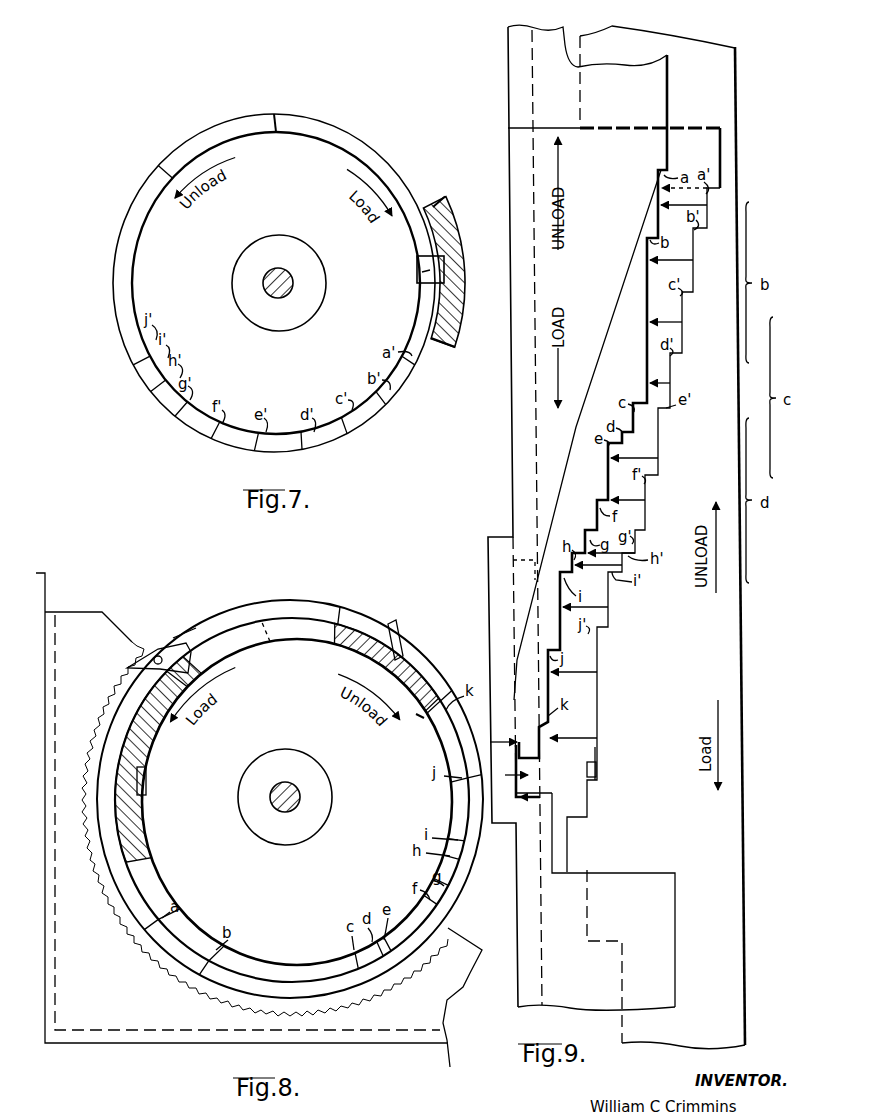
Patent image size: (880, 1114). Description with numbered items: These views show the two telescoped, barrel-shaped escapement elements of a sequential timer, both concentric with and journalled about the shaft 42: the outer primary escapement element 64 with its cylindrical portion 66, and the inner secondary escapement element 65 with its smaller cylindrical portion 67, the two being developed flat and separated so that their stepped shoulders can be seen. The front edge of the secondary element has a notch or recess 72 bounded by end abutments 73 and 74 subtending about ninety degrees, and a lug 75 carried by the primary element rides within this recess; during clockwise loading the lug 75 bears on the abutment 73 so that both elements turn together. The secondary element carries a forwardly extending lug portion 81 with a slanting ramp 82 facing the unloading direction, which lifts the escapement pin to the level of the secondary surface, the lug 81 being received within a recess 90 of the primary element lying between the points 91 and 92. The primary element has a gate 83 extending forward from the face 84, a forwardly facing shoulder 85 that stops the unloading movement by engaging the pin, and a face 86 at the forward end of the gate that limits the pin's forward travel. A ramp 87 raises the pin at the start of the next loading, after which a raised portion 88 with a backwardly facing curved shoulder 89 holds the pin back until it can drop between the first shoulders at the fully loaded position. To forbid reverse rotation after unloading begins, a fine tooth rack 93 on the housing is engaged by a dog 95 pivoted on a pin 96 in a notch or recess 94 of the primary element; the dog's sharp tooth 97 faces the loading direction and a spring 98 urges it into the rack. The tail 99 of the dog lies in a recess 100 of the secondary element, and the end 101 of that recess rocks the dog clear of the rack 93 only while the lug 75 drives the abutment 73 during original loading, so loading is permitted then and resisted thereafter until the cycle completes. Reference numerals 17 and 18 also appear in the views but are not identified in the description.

In FIG. 7, the shaft 42 is at (266, 293).
In FIG. 8, the shaft 42 is at (270, 810).
In FIG. 7, the primary escapement element 64 is at (457, 348).
In FIG. 8, the primary escapement element 64 is at (292, 962).
In FIG. 9, the primary escapement element 64 is at (506, 128).
In FIG. 7, the secondary escapement element 65 is at (128, 352).
In FIG. 8, the secondary escapement element 65 is at (420, 720).
In FIG. 9, the secondary escapement element 65 is at (737, 130).
In FIG. 7, the cylindrical portion 66 is at (449, 346).
In FIG. 8, the cylindrical portion 66 is at (304, 612).
In FIG. 7, the cylindrical portion 67 is at (343, 445).
In FIG. 8, the cylindrical portion 67 is at (345, 645).
In FIG. 7, the notch or recess 72 is at (382, 166).
In FIG. 7, the end abutment 73 is at (430, 290).
In FIG. 8, the end abutment 73 is at (130, 800).
In FIG. 7, the end abutment 74 is at (291, 126).
In FIG. 8, the end abutment 74 is at (260, 620).
In FIG. 7, the lug 75 is at (416, 272).
In FIG. 8, the lug 75 is at (147, 780).
In FIG. 9, the lug portion 81 is at (582, 800).
In FIG. 7, the slanting ramp 82 is at (166, 178).
In FIG. 9, the slanting ramp 82 is at (596, 768).
In FIG. 8, the gate 83 is at (402, 656).
In FIG. 9, the gate 83 is at (556, 736).
In FIG. 9, the primary element face 84 is at (540, 738).
In FIG. 8, the forwardly facing shoulder 85 is at (398, 630).
In FIG. 9, the forwardly facing shoulder 85 is at (562, 783).
In FIG. 8, the face 86 is at (501, 839).
In FIG. 9, the face 86 is at (516, 795).
In FIG. 8, the ramp or slanting portion 87 is at (428, 688).
In FIG. 9, the ramp or slanting portion 87 is at (505, 736).
In FIG. 8, the raised portion 88 is at (452, 914).
In FIG. 9, the raised portion 88 is at (548, 424).
In FIG. 9, the backwardly facing curved shoulder 89 is at (562, 486).
In FIG. 9, the recess 90 is at (525, 594).
In FIG. 9, the point 91 is at (535, 566).
In FIG. 8, the point 92 is at (504, 864).
In FIG. 8, the fine tooth rack 93 is at (142, 955).
In FIG. 8, the notch or recess 94 is at (177, 630).
In FIG. 8, the dog 95 is at (150, 665).
In FIG. 8, the pin 96 is at (156, 655).
In FIG. 8, the sharp tooth 97 is at (150, 680).
In FIG. 8, the spring 98 is at (166, 645).
In FIG. 8, the tail 99 is at (186, 680).
In FIG. 8, the recess 100 is at (232, 645).
In FIG. 8, the end 101 is at (134, 704).
In FIG. 9, the cam step 17 is at (592, 748).
In FIG. 9, the cam step 18 is at (532, 749).